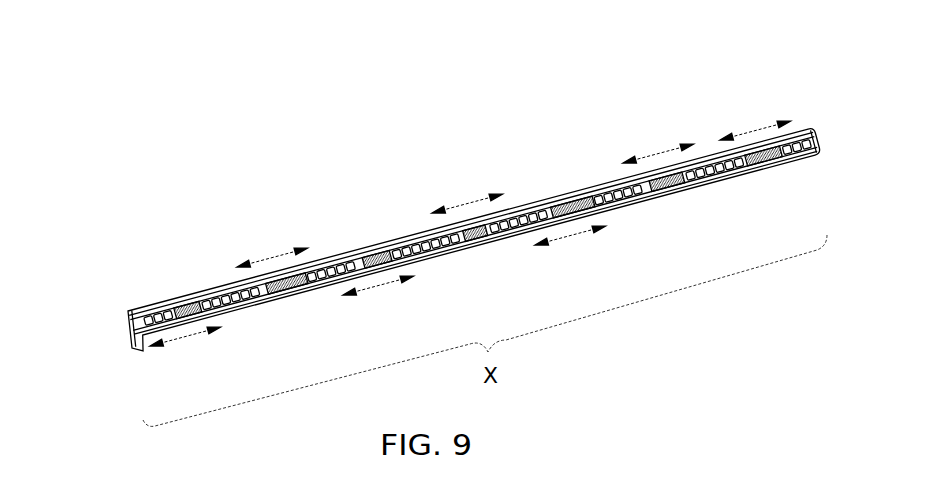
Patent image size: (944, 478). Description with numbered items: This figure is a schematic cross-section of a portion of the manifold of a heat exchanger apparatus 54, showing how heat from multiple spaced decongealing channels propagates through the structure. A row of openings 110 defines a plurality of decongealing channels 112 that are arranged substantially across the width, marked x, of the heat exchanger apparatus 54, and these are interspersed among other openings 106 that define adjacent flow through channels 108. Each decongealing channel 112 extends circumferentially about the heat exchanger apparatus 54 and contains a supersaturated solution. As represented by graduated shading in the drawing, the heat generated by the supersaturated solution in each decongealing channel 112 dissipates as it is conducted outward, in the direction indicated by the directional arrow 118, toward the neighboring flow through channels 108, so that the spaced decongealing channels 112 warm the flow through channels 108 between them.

The heat exchanger apparatus 54 is at (471, 239).
The openings defining flow through channels 106 is at (465, 191).
The flow through channels 108 is at (426, 230).
The openings defining decongealing channels 110 is at (475, 239).
The decongealing channels 112 is at (173, 297).
The directional arrow 118 is at (190, 338).